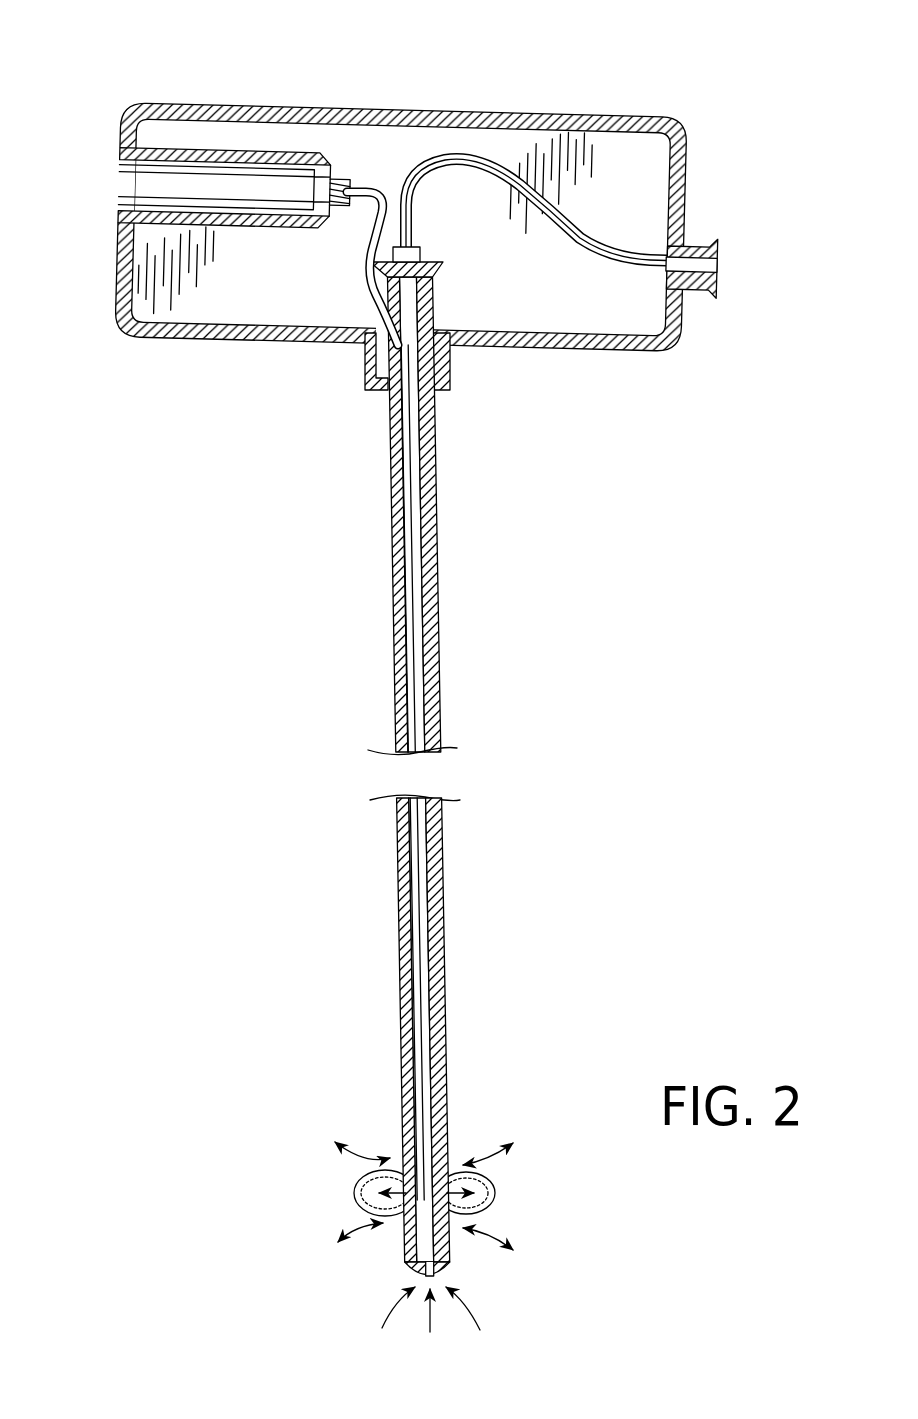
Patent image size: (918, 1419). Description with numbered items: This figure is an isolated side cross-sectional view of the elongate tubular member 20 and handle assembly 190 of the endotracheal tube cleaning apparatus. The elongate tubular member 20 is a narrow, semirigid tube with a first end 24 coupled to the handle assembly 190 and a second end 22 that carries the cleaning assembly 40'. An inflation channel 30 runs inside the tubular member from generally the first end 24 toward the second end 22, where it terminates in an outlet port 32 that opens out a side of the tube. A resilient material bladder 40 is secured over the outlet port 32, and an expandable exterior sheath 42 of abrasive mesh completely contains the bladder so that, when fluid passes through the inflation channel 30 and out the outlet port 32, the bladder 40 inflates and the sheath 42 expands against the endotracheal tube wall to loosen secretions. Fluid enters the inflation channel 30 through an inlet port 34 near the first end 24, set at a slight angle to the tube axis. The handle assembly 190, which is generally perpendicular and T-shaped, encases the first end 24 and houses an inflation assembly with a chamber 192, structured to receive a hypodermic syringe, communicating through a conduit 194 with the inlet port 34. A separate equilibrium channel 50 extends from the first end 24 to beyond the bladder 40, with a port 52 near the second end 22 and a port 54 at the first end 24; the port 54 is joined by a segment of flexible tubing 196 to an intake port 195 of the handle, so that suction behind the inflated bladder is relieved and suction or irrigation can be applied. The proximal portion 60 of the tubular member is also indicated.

The elongate tubular member 20 is at (457, 614).
The second end 22 is at (450, 1264).
The first end 24 is at (423, 302).
The inflation channel 30 is at (395, 845).
The outlet port 32 is at (352, 1176).
The inlet port 34 is at (358, 340).
The resilient material bladder 40 is at (505, 1196).
The cleaning assembly 40' is at (334, 1200).
The expandable exterior sheath 42 is at (357, 1183).
The equilibrium channel 50 is at (425, 940).
The port 52 is at (410, 1265).
The port 54 is at (413, 245).
The proximal portion 60 is at (492, 397).
The handle assembly 190 is at (422, 102).
The chamber 192 is at (223, 173).
The conduit 194 is at (348, 282).
The intake port 195 is at (711, 247).
The flexible tubing 196 is at (565, 214).